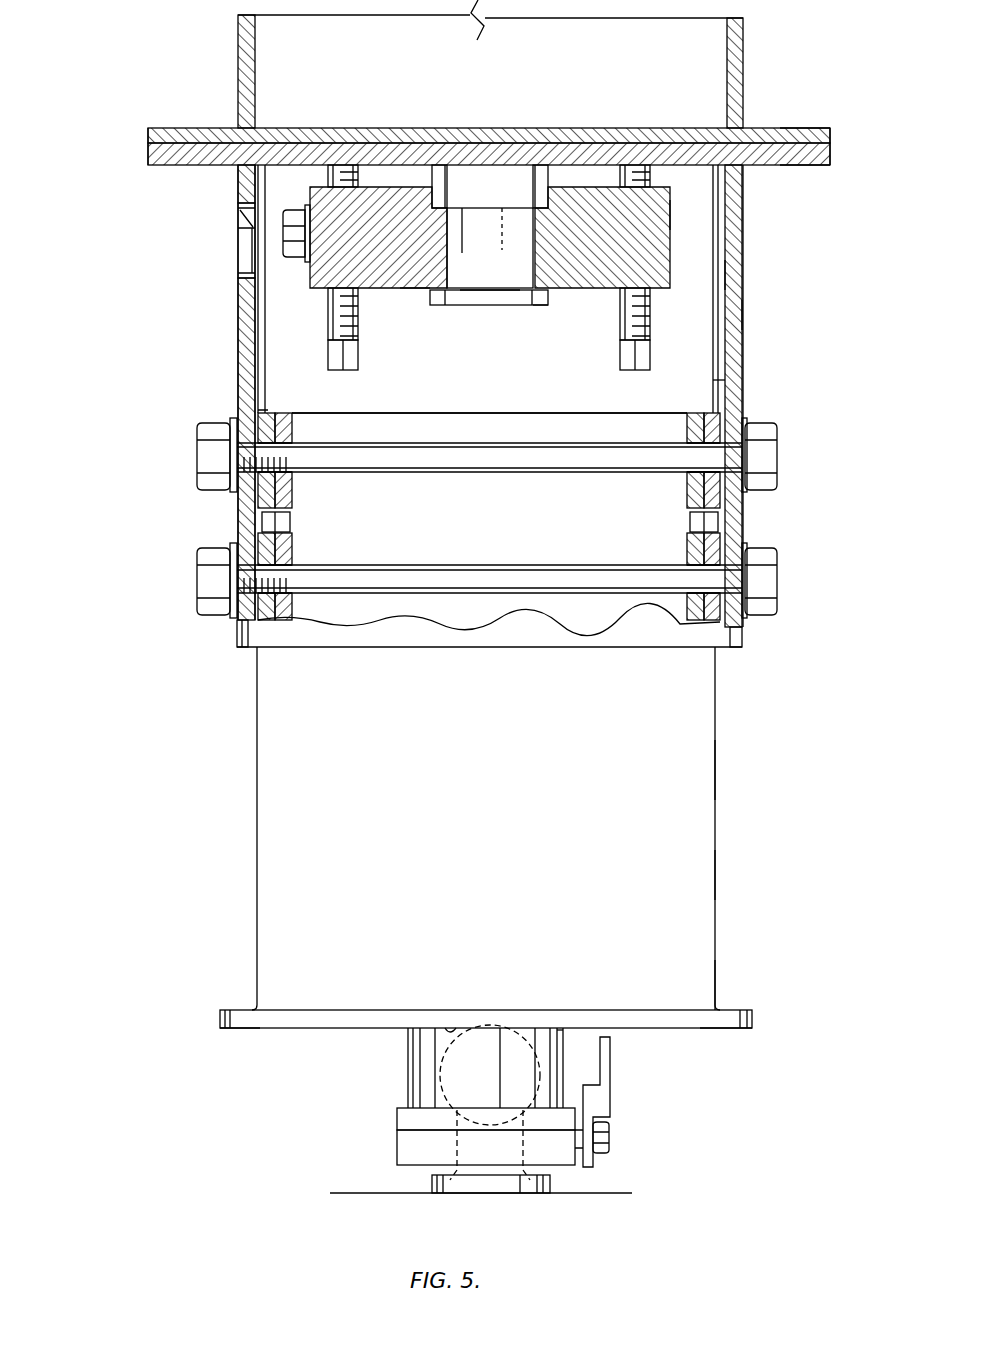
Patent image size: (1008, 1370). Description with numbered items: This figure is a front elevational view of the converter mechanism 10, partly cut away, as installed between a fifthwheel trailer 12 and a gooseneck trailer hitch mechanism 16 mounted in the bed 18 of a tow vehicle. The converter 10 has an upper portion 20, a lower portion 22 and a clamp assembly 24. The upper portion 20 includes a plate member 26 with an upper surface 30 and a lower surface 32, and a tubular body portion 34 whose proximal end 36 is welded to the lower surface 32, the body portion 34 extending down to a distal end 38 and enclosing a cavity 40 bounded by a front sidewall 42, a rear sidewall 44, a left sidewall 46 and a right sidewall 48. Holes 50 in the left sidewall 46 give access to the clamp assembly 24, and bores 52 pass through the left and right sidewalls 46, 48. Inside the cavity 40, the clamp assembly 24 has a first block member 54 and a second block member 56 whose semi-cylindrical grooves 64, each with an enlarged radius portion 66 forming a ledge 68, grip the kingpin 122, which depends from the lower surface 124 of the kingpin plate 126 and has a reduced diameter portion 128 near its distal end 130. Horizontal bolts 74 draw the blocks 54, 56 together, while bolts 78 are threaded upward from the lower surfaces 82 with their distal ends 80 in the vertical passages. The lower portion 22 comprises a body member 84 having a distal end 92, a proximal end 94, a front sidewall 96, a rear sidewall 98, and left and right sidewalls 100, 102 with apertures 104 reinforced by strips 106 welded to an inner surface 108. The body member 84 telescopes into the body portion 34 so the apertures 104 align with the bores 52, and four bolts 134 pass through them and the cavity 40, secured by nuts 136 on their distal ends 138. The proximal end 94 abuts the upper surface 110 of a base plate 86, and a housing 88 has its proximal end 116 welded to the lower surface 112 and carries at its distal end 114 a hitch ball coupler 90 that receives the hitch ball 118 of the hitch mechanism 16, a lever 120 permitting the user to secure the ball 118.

The converter mechanism 10 is at (105, 770).
The fifthwheel trailer 12 is at (745, 55).
The gooseneck trailer hitch mechanism 16 is at (480, 1190).
The bed 18 is at (342, 1192).
The upper portion 20 is at (238, 350).
The lower portion 22 is at (257, 860).
The clamp assembly 24 is at (672, 225).
The plate member 26 is at (798, 168).
The upper surface 30 is at (180, 138).
The lower surface 32 is at (160, 166).
The body portion 34 is at (740, 275).
The proximal end 36 is at (743, 177).
The distal end 38 is at (733, 648).
The cavity 40 is at (403, 382).
The front sidewall 42 is at (488, 640).
The rear sidewall 44 is at (705, 379).
The left sidewall 46 is at (260, 520).
The right sidewall 48 is at (741, 313).
The holes 50 is at (243, 248).
The bores 52 is at (290, 478).
The first block member 54 is at (390, 288).
The second block member 56 is at (582, 288).
The semi-cylindrical groove 64 is at (530, 243).
The enlarged radius portion 66 is at (545, 203).
The ledge 68 is at (441, 207).
The bolts 74 is at (300, 212).
The bolts 78 is at (337, 303).
The distal ends 80 is at (366, 175).
The lower surfaces 82 is at (412, 289).
The body member 84 is at (718, 777).
The base plate 86 is at (735, 1028).
The housing 88 is at (558, 1040).
The hitch ball coupler 90 is at (400, 1152).
The distal end 92 is at (272, 410).
The proximal end 94 is at (718, 1008).
The front sidewall 96 is at (718, 877).
The rear sidewall 98 is at (550, 417).
The left sidewall 100 is at (270, 548).
The right sidewall 102 is at (693, 523).
The apertures 104 is at (265, 445).
The strips 106 is at (690, 477).
The inner surface 108 is at (403, 414).
The upper surface 110 is at (235, 1010).
The lower surface 112 is at (240, 1030).
The distal end 114 is at (412, 1094).
The proximal end 116 is at (447, 1030).
The hitch ball 118 is at (410, 1058).
The lever 120 is at (612, 1060).
The kingpin 122 is at (510, 300).
The lower surface 124 is at (830, 150).
The kingpin plate 126 is at (805, 128).
The reduced diameter portion 128 is at (488, 275).
The distal end 130 is at (482, 300).
The bolts 134 is at (508, 462).
The nuts 136 is at (208, 420).
The distal ends 138 is at (198, 578).